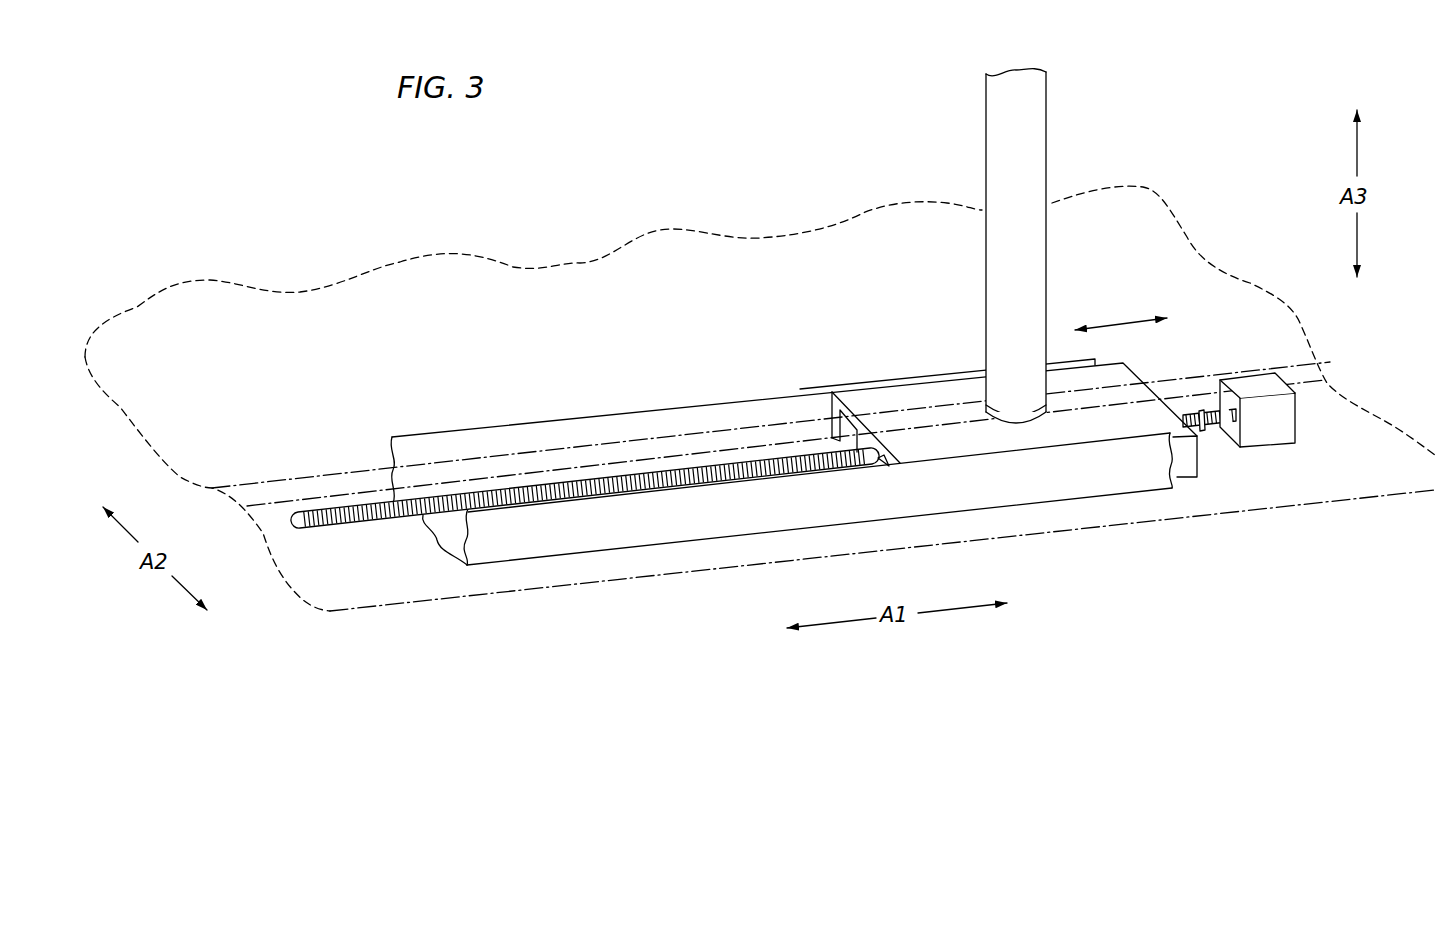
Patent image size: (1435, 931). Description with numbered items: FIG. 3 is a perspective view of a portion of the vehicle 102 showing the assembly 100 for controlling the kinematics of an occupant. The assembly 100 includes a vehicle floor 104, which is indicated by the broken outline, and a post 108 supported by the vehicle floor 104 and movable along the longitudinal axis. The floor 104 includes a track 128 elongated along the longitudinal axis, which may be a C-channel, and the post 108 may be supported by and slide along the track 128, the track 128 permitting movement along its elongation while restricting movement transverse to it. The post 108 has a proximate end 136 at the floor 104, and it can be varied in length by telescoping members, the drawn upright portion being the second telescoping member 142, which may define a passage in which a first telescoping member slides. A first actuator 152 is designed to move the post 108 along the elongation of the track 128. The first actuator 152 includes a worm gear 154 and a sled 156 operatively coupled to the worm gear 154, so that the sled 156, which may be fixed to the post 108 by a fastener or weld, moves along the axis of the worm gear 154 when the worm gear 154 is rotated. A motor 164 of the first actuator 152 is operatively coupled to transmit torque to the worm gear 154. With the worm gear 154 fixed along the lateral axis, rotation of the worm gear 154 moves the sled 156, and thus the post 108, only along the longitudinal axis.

The assembly 100 is at (1220, 213).
The vehicle 102 is at (1140, 525).
The vehicle floor 104 is at (232, 373).
The post 108 is at (1003, 246).
The track 128 is at (391, 430).
The proximate end 136 is at (998, 413).
The second telescoping member 142 is at (1033, 153).
The first actuator 152 is at (1233, 495).
The worm gear 154 is at (377, 523).
The sled 156 is at (865, 402).
The motor 164 is at (1273, 447).